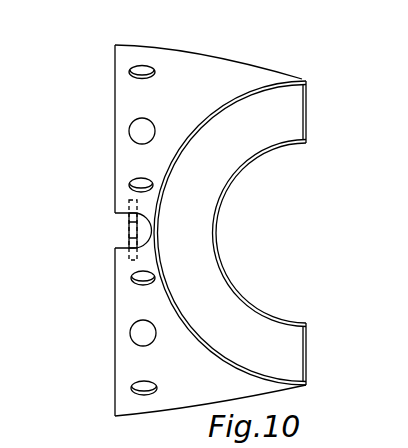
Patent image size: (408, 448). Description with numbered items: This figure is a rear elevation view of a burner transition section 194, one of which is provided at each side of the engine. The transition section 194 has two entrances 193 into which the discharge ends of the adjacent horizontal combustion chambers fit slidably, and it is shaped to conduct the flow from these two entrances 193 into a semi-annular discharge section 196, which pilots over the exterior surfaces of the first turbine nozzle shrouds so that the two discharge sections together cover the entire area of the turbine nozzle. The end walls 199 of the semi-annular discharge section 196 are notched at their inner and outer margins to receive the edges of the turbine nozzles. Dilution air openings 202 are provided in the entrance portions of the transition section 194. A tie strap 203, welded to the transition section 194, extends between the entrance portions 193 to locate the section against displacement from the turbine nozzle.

The entrances 193 is at (114, 72).
The burner transition section 194 is at (201, 57).
The semi-annular discharge section 196 is at (222, 197).
The end walls 199 is at (307, 353).
The dilution air openings 202 is at (147, 129).
The tie strap 203 is at (131, 243).